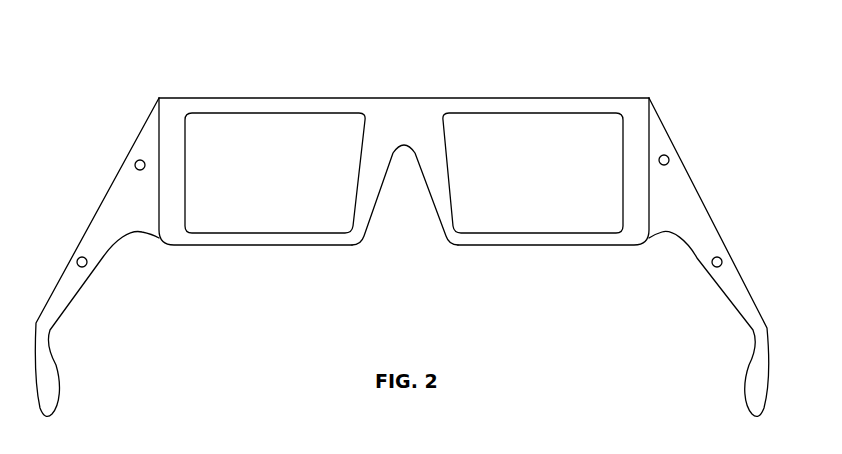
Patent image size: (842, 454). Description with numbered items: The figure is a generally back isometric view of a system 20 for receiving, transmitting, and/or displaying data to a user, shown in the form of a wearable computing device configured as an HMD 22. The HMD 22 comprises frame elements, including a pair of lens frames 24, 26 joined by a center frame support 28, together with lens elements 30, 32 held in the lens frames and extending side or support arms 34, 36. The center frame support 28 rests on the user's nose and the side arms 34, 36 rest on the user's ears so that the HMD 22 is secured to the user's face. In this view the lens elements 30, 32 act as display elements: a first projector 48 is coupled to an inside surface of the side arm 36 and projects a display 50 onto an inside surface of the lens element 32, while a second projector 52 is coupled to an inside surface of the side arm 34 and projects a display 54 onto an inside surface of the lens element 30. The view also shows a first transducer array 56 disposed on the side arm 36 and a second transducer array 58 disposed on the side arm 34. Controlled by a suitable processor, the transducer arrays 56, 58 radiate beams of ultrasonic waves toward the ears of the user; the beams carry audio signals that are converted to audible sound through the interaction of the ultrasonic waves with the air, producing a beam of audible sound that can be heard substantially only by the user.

The system 20 is at (616, 339).
The HMD 22 is at (208, 86).
The lens frame 24 is at (557, 246).
The lens frame 26 is at (203, 246).
The center frame support 28 is at (403, 99).
The lens element 30 is at (500, 225).
The lens element 32 is at (290, 225).
The side arm 34 is at (699, 197).
The side arm 36 is at (102, 198).
The first projector 48 is at (135, 162).
The display 50 is at (208, 143).
The second projector 52 is at (665, 156).
The display 54 is at (587, 144).
The first transducer array 56 is at (77, 262).
The second transducer array 58 is at (718, 257).